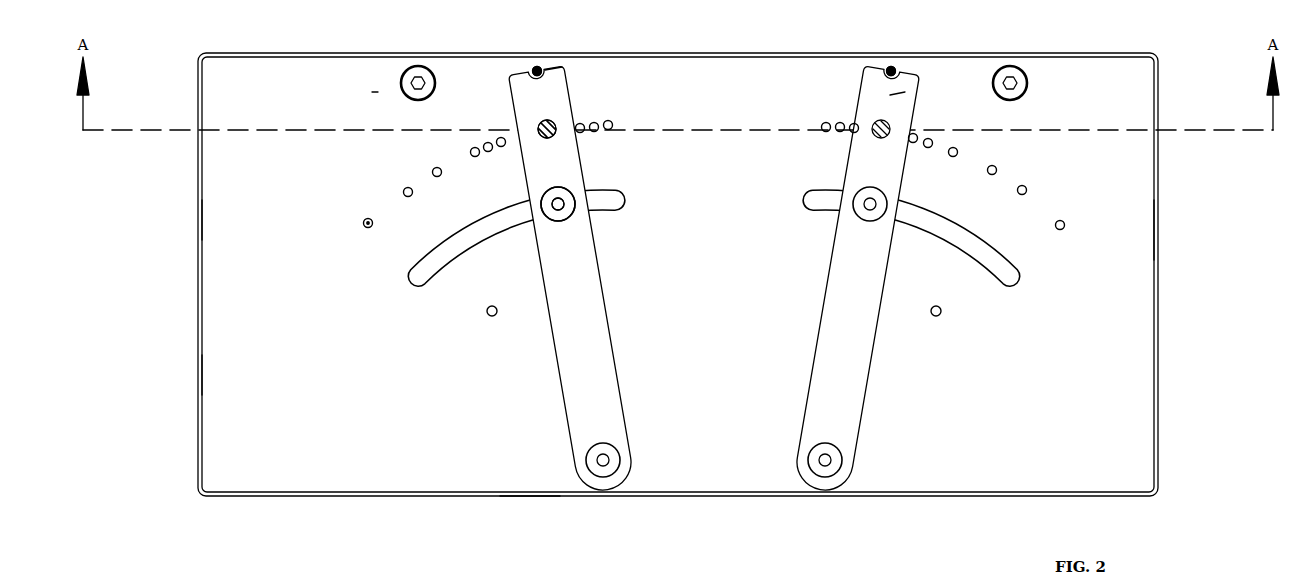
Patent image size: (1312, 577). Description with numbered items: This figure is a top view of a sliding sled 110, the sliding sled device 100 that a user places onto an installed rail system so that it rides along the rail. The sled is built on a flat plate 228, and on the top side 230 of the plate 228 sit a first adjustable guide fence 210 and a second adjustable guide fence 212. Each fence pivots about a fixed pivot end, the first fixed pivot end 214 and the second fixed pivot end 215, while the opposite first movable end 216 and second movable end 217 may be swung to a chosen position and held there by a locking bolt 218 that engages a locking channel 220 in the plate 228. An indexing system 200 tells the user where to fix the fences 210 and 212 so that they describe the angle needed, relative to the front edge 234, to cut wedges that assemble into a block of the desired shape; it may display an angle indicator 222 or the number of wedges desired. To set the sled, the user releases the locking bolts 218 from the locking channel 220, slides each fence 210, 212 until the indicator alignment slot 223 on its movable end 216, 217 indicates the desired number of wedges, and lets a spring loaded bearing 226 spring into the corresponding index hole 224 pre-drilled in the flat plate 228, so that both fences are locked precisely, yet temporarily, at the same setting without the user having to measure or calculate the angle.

The sliding sled device 100 is at (1200, 245).
The sliding sled 110 is at (382, 480).
The indexing system 200 is at (362, 90).
The first adjustable guide fence 210 is at (830, 382).
The second adjustable guide fence 212 is at (590, 382).
The first fixed pivot end 214 is at (845, 470).
The second fixed pivot end 215 is at (628, 470).
The first movable end 216 is at (898, 97).
The second movable end 217 is at (556, 70).
The locking bolt 218 is at (561, 215).
The locking channel 220 is at (425, 275).
The angle indicator 222 is at (478, 80).
The indicator alignment slot 223 is at (533, 68).
The index hole 224 is at (368, 228).
The spring loaded bearing 226 is at (545, 140).
The flat plate 228 is at (198, 218).
The top side 230 is at (227, 375).
The front edge 234 is at (527, 498).